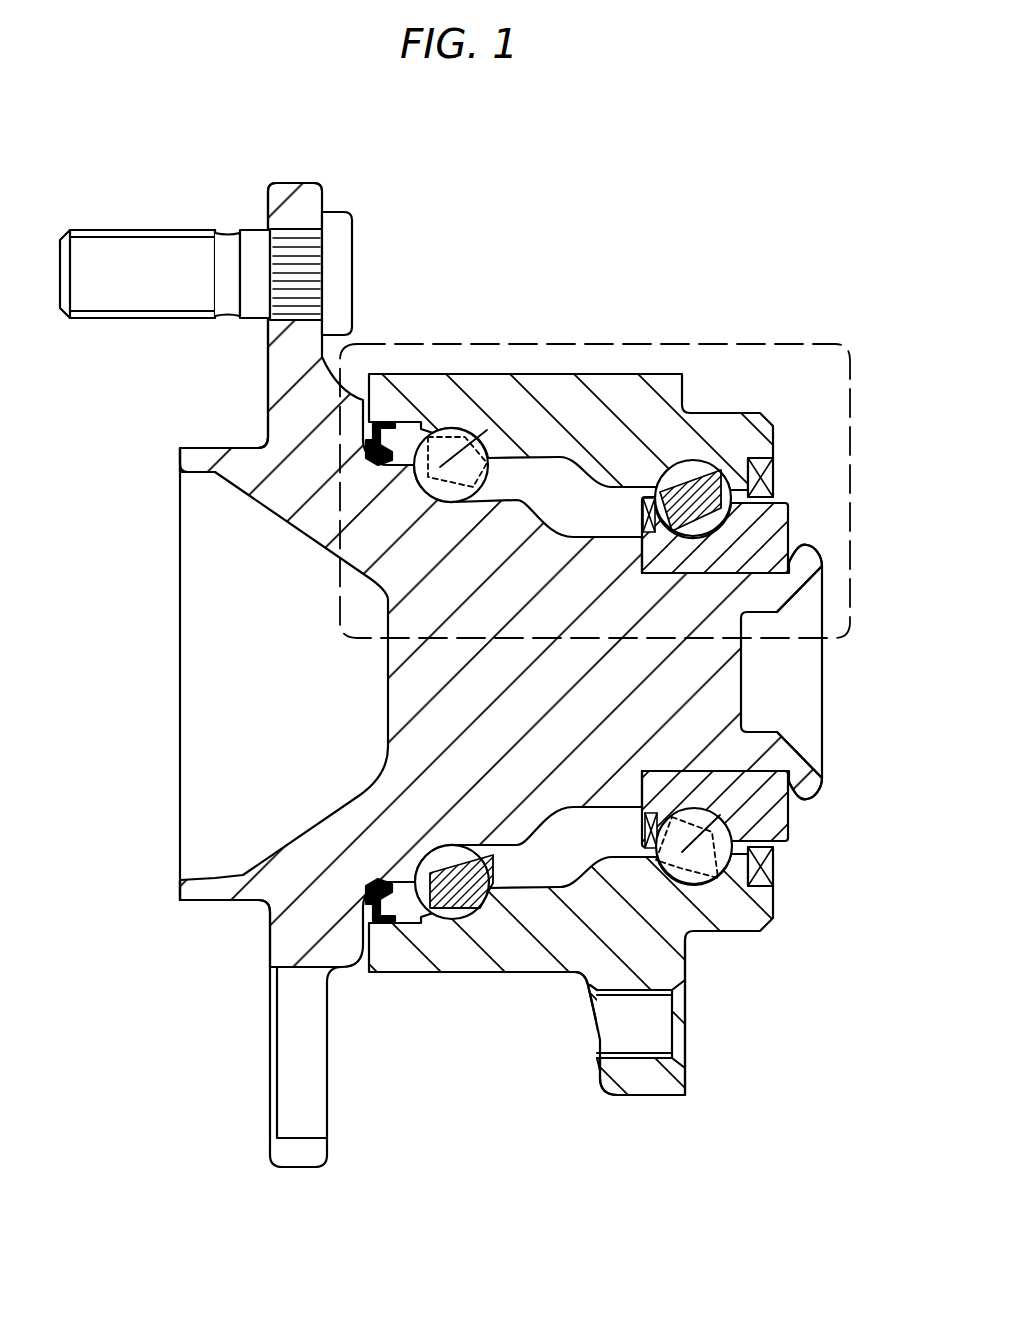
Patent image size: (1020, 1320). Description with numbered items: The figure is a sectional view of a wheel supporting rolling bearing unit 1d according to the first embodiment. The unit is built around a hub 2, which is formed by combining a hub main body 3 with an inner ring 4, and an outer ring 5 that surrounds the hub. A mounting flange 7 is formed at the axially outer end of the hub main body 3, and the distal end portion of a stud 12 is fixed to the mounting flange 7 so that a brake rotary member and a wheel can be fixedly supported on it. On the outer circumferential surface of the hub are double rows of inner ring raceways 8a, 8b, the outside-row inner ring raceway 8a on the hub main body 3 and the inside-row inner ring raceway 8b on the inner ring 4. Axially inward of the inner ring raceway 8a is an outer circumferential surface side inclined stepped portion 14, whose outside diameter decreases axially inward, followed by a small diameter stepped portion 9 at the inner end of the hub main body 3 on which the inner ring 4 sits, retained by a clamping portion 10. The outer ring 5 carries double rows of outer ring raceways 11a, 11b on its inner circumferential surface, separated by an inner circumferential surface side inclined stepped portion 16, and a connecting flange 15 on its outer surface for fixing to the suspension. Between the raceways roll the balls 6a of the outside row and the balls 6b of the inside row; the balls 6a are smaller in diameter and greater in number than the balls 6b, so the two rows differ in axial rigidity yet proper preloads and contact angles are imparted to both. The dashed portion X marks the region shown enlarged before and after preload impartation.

The wheel supporting rolling bearing unit 1d is at (232, 920).
The hub 2 is at (330, 497).
The hub main body 3 is at (292, 433).
The inner ring 4 is at (760, 527).
The outer ring 5 is at (622, 390).
The rolling element 6a is at (444, 452).
The rolling element 6b is at (723, 490).
The mounting flange 7 is at (292, 207).
The inner ring raceway 8a is at (440, 905).
The inner ring raceway 8b is at (738, 905).
The small diameter stepped portion 9 is at (792, 804).
The clamping portion 10 is at (818, 776).
The outer ring raceway 11a is at (449, 448).
The outer ring raceway 11b is at (703, 463).
The stud 12 is at (148, 258).
The outer circumferential surface side inclined stepped portion 14 is at (543, 821).
The connecting flange 15 is at (640, 1082).
The inner circumferential surface side inclined stepped portion 16 is at (598, 872).
The portion X is at (525, 340).